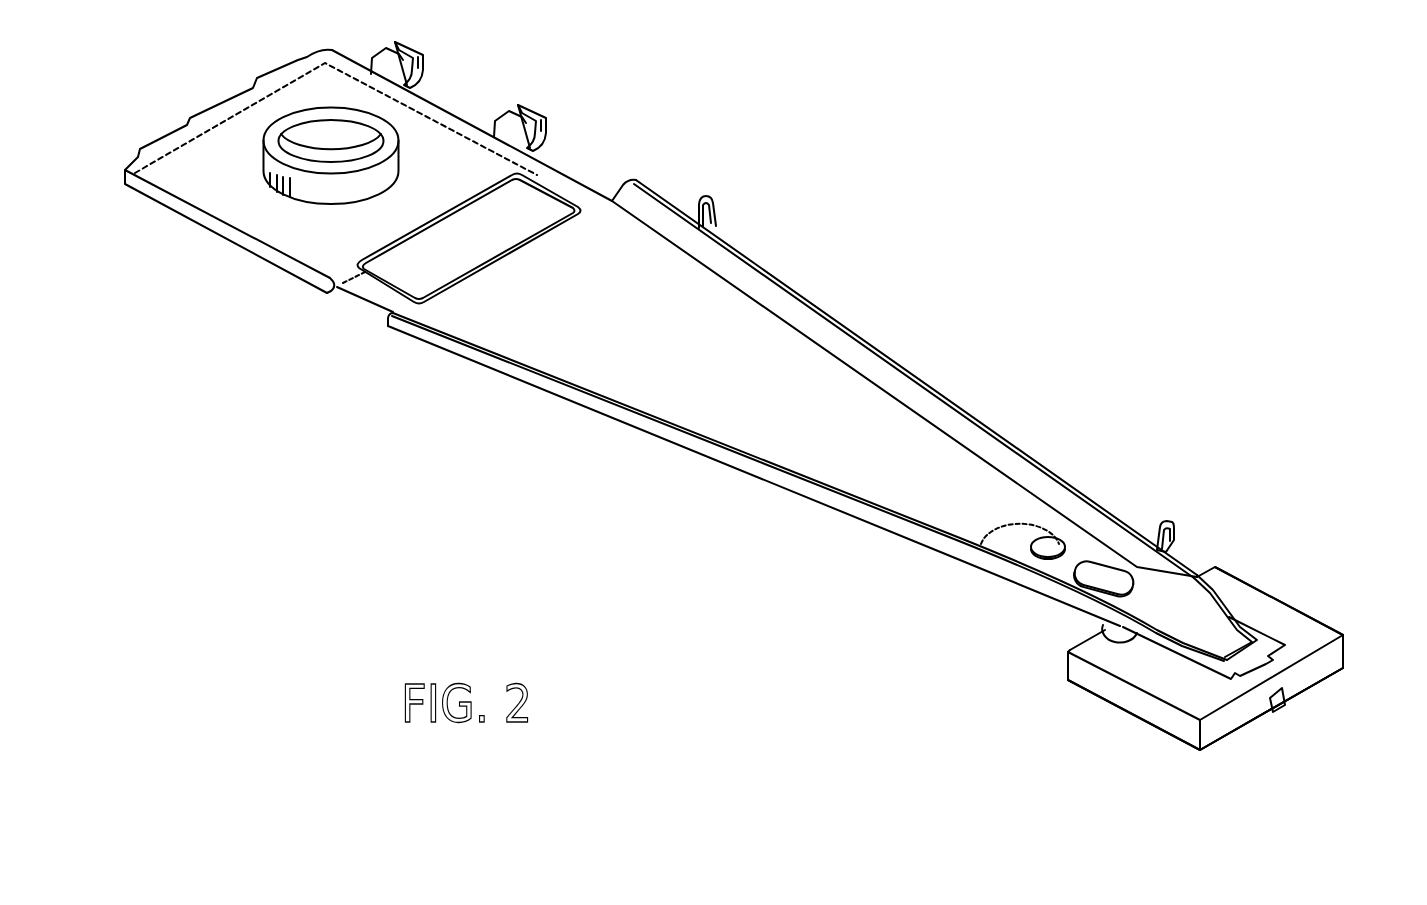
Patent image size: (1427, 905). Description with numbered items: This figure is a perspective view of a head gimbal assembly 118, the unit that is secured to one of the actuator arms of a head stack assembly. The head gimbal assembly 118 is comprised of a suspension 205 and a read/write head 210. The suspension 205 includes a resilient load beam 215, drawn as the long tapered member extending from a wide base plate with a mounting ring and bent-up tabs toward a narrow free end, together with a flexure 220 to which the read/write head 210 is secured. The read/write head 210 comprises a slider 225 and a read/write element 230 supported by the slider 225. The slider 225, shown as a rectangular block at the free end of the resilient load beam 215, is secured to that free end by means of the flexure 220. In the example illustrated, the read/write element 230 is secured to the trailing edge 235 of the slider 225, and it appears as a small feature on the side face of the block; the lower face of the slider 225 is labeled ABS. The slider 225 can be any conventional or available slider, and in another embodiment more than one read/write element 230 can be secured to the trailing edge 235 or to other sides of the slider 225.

The head gimbal assembly 118 is at (857, 173).
The suspension 205 is at (807, 418).
The read/write head 210 is at (1244, 642).
The resilient load beam 215 is at (838, 392).
The flexure 220 is at (1107, 627).
The slider 225 is at (1272, 595).
The read/write element 230 is at (1278, 708).
The trailing edge 235 is at (1347, 665).
The air bearing surface ABS is at (1232, 738).